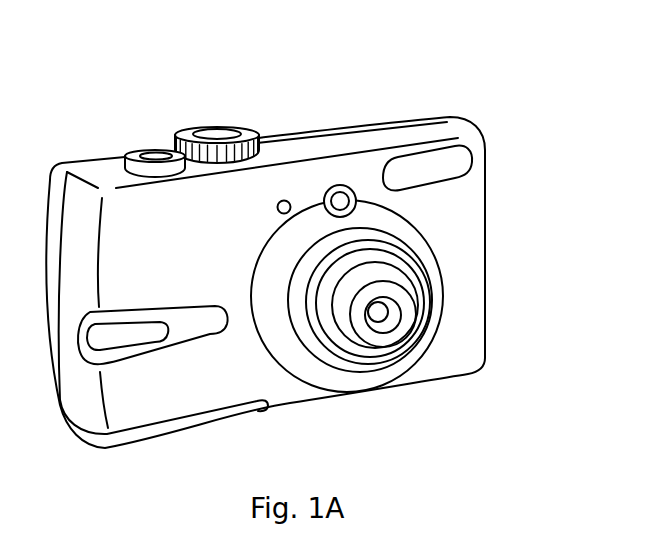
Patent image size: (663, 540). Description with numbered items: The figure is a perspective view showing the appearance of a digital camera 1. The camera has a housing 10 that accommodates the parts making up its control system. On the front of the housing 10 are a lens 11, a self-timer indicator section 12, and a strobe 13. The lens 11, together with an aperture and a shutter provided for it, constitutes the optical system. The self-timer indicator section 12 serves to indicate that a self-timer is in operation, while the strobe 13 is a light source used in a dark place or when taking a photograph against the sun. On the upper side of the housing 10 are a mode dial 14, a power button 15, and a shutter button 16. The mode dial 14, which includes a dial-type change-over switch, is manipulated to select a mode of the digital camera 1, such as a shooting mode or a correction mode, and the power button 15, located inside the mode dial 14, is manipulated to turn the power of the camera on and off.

The digital camera 1 is at (331, 98).
The housing 10 is at (423, 131).
The lens 11 is at (388, 322).
The self-timer indicator section 12 is at (123, 338).
The strobe 13 is at (430, 168).
The mode dial 14 is at (247, 129).
The power button 15 is at (217, 128).
The shutter button 16 is at (134, 153).